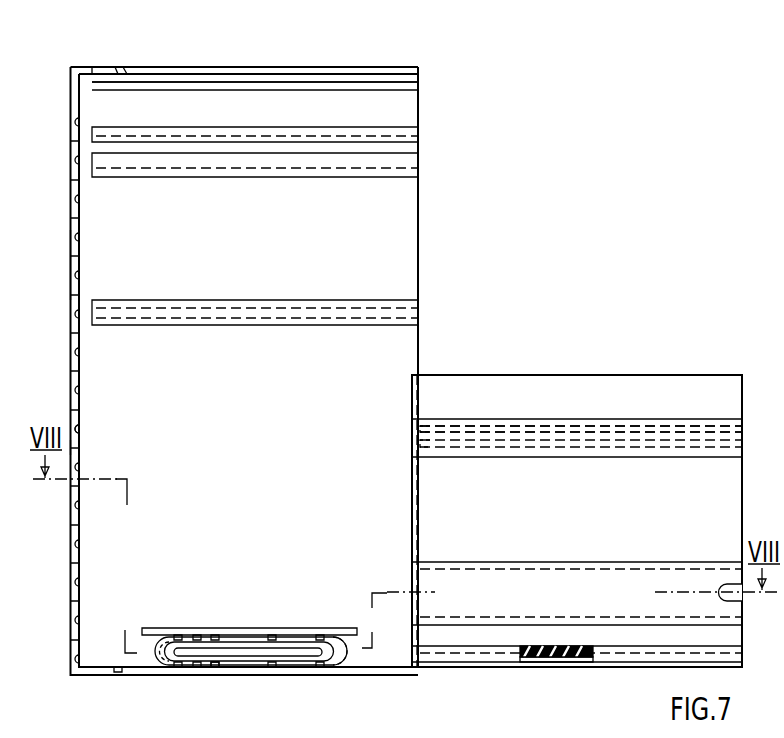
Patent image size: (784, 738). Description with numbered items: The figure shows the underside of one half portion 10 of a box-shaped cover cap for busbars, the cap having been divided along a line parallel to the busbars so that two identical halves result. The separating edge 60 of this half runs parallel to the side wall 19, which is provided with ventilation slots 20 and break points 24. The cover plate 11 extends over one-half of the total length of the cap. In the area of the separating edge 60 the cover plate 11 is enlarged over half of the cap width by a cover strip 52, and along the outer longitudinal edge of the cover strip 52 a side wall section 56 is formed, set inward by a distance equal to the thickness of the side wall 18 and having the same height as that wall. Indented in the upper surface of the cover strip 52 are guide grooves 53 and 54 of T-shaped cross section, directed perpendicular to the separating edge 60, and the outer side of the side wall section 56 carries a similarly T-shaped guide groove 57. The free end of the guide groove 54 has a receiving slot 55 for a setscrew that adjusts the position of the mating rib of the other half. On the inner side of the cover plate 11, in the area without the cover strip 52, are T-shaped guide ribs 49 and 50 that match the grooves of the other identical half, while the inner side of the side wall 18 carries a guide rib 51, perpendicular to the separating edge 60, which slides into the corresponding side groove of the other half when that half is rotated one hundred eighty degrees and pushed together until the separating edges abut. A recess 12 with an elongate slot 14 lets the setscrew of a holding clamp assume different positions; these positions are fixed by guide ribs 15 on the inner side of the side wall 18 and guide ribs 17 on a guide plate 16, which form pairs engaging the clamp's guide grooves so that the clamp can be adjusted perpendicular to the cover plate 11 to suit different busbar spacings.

The half portion of the cover cap 10 is at (488, 263).
The cover plate 11 is at (404, 352).
The recess 12 is at (298, 667).
The elongate slot 14 is at (245, 655).
The guide ribs 15 is at (218, 670).
The guide plate 16 is at (298, 630).
The guide ribs 17 is at (272, 634).
The side wall 18 is at (258, 67).
The side wall 19 is at (79, 262).
The ventilation slots 20 is at (79, 447).
The break points 24 is at (79, 430).
The guide rib 49 is at (352, 300).
The guide rib 50 is at (405, 152).
The guide rib 51 is at (350, 82).
The cover strip 52 is at (584, 390).
The guide groove 53 is at (648, 432).
The guide groove 54 is at (555, 585).
The receiving slot 55 is at (724, 582).
The side wall section 56 is at (488, 667).
The guide groove 57 is at (560, 660).
The separating edge 60 is at (421, 203).